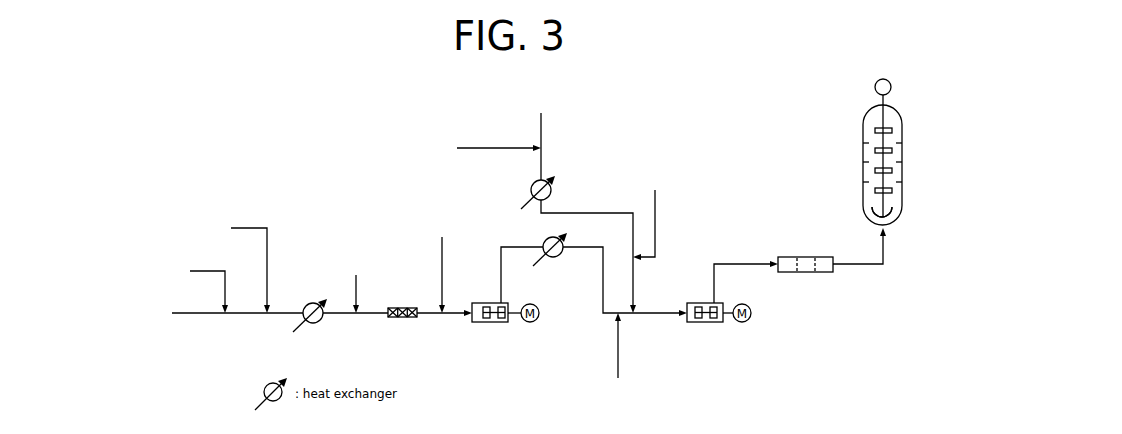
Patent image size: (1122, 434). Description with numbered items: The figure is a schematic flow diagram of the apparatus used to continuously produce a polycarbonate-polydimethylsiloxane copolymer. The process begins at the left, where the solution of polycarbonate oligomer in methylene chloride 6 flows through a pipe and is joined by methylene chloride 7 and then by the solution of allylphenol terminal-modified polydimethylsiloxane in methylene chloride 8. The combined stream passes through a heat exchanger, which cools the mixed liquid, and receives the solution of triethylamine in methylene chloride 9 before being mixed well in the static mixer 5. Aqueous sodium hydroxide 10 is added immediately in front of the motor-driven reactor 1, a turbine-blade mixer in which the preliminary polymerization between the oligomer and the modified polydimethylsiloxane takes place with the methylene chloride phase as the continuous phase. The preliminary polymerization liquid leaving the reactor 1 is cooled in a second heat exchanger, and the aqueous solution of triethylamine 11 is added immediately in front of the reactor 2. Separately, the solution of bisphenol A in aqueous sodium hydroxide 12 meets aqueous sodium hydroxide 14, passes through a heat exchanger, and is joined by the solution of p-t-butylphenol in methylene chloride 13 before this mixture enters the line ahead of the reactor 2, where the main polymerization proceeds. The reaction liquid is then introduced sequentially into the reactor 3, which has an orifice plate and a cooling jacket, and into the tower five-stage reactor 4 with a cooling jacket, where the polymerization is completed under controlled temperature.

The reactor 1 is at (575, 290).
The reactor 2 is at (731, 304).
The reactor 3 is at (832, 264).
The reactor 4 is at (901, 165).
The mixer 5 is at (427, 327).
The solution of polycarbonate oligomer in methylene chloride 6 is at (244, 315).
The methylene chloride 7 is at (188, 288).
The solution of allylphenol terminal-modified polydimethylsiloxane in methylene chlo 8 is at (208, 266).
The solution of triethylamine in methylene chloride 9 is at (358, 285).
The aqueous sodium hydroxide 10 is at (445, 264).
The aqueous solution of triethylamine 11 is at (620, 366).
The solution of bisphenol A in aqueous sodium hydroxide 12 is at (554, 194).
The solution of p-t-butylphenol in methylene chloride 13 is at (657, 216).
The aqueous sodium hydroxide 14 is at (429, 150).